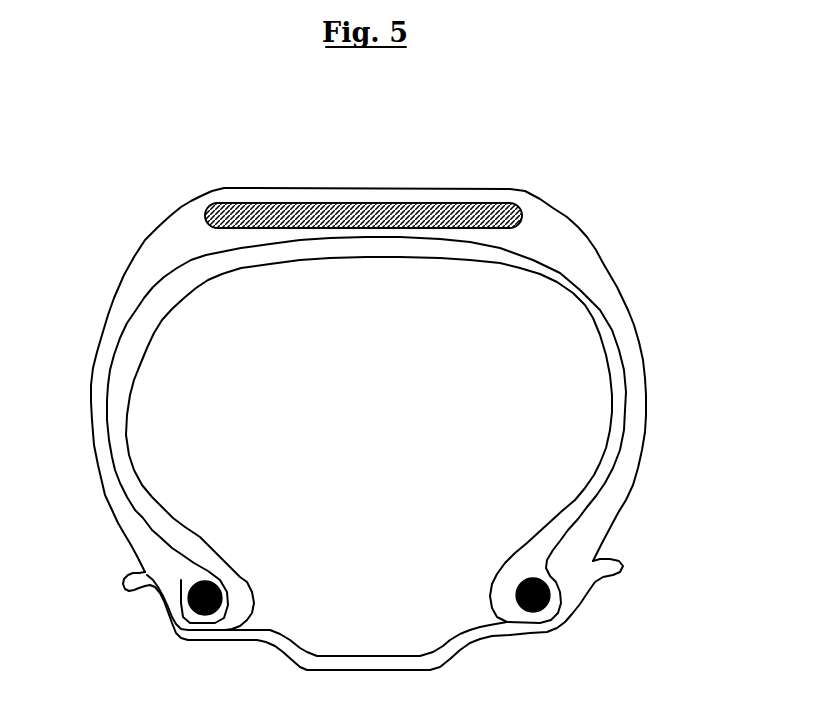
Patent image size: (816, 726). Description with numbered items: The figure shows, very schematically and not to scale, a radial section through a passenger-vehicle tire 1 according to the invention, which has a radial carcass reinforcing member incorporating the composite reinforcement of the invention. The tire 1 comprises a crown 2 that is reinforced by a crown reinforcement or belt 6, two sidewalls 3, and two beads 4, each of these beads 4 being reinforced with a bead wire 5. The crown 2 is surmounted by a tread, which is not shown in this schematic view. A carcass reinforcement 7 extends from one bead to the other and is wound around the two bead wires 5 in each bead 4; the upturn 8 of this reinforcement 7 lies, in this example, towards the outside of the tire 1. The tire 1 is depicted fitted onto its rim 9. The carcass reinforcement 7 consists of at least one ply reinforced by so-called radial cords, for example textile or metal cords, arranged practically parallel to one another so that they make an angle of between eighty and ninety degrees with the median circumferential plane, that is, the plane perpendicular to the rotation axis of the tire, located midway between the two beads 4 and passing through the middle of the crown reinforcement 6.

The tire 1 is at (663, 338).
The crown 2 is at (450, 193).
The sidewall 3 is at (98, 402).
The bead 4 is at (233, 617).
The bead wire 5 is at (223, 598).
The crown reinforcement or belt 6 is at (358, 204).
The carcass reinforcement 7 is at (124, 322).
The upturn 8 is at (181, 580).
The rim 9 is at (168, 605).